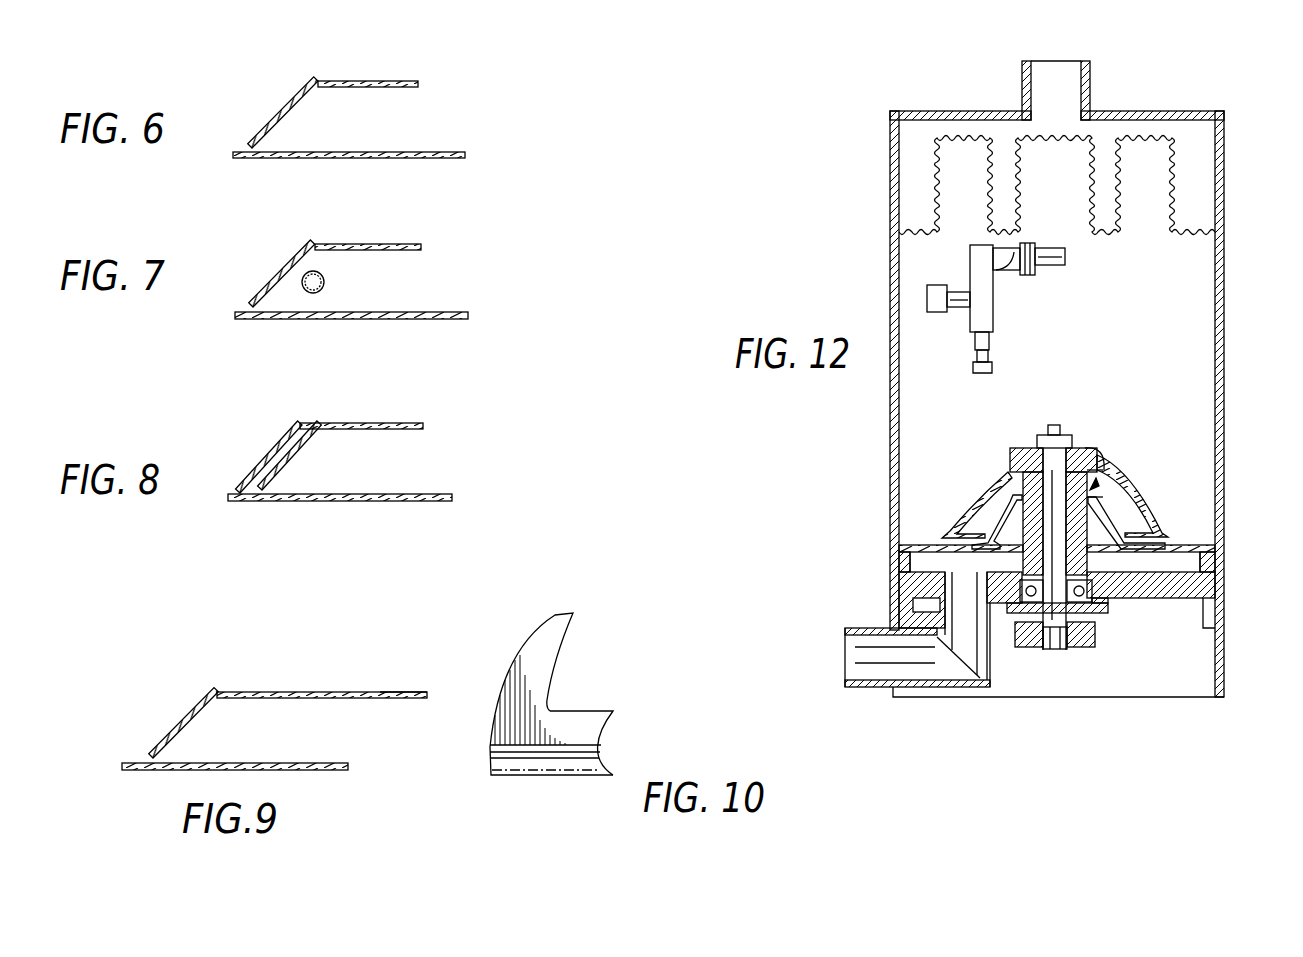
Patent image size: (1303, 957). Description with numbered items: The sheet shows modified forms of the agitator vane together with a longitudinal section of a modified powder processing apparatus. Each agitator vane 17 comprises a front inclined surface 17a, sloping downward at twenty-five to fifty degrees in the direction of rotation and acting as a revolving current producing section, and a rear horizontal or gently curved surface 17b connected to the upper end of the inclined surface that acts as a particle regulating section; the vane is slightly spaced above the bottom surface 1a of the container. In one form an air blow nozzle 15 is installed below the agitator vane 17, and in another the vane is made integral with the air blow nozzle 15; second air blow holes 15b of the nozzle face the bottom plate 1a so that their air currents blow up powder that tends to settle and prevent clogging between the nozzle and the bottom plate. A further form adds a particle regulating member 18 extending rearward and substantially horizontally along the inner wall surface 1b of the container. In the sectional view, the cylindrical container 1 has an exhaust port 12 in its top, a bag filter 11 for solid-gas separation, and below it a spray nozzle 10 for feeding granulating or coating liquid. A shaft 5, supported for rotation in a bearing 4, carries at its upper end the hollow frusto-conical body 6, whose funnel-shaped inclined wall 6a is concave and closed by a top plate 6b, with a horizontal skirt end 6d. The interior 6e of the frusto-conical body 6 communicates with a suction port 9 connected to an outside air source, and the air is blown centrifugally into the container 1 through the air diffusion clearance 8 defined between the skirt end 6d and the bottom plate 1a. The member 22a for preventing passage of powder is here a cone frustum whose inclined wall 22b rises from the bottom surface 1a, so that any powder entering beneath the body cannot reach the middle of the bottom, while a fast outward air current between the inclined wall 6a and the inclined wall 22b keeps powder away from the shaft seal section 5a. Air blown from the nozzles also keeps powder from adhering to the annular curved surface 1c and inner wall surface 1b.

In FIG. 12, the cylindrical container 1 is at (1056, 404).
In FIG. 6, the bottom surface 1a is at (350, 152).
In FIG. 7, the bottom surface 1a is at (437, 312).
In FIG. 8, the bottom surface 1a is at (393, 494).
In FIG. 9, the bottom surface 1a is at (255, 763).
In FIG. 12, the bottom surface 1a is at (1195, 540).
In FIG. 12, the inner wall surface 1b is at (1210, 345).
In FIG. 12, the annular curved surface 1c is at (903, 535).
In FIG. 12, the bearing 4 is at (1108, 600).
In FIG. 12, the shaft 5 is at (1055, 637).
In FIG. 12, the shaft seal section 5a is at (1037, 623).
In FIG. 12, the hollow frusto-conical body 6 is at (1061, 520).
In FIG. 12, the inclined wall 6a is at (1123, 530).
In FIG. 12, the top plate 6b is at (1090, 447).
In FIG. 12, the skirt end 6d is at (1162, 543).
In FIG. 12, the interior of the frusto-conical body 6e is at (1100, 478).
In FIG. 12, the air diffusion clearance 8 is at (1160, 553).
In FIG. 12, the suction port 9 is at (940, 580).
In FIG. 12, the spray nozzle 10 is at (992, 340).
In FIG. 12, the bag filter 11 is at (1080, 178).
In FIG. 12, the exhaust port 12 is at (1065, 88).
In FIG. 7, the air blow nozzle 15 is at (344, 282).
In FIG. 8, the air blow nozzle 15 is at (290, 458).
In FIG. 7, the second air blow hole 15b is at (321, 291).
In FIG. 6, the agitator vane 17 is at (318, 85).
In FIG. 7, the agitator vane 17 is at (334, 252).
In FIG. 8, the agitator vane 17 is at (316, 430).
In FIG. 9, the agitator vane 17 is at (278, 695).
In FIG. 10, the agitator vane 17 is at (536, 716).
In FIG. 6, the inclined surface 17a is at (282, 112).
In FIG. 7, the inclined surface 17a is at (294, 264).
In FIG. 8, the inclined surface 17a is at (272, 456).
In FIG. 9, the inclined surface 17a is at (193, 720).
In FIG. 10, the inclined surface 17a is at (540, 775).
In FIG. 6, the horizontal surface 17b is at (396, 80).
In FIG. 7, the horizontal surface 17b is at (393, 244).
In FIG. 8, the horizontal surface 17b is at (400, 423).
In FIG. 9, the horizontal surface 17b is at (292, 692).
In FIG. 10, the horizontal surface 17b is at (585, 711).
In FIG. 9, the particle regulating member 18 is at (392, 692).
In FIG. 10, the particle regulating member 18 is at (533, 647).
In FIG. 12, the member for preventing passage of powder 22a is at (1008, 470).
In FIG. 12, the inclined wall of the member 22b is at (985, 520).